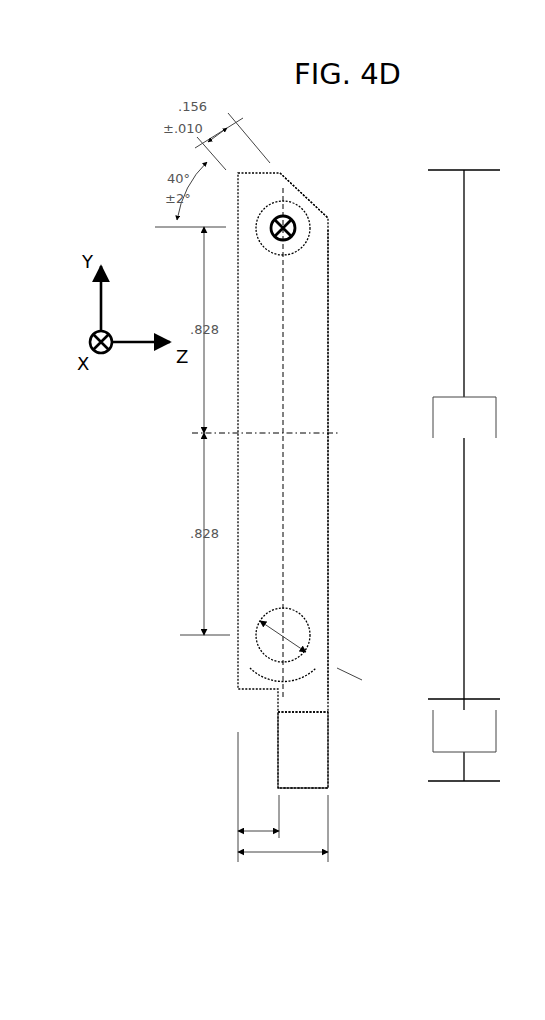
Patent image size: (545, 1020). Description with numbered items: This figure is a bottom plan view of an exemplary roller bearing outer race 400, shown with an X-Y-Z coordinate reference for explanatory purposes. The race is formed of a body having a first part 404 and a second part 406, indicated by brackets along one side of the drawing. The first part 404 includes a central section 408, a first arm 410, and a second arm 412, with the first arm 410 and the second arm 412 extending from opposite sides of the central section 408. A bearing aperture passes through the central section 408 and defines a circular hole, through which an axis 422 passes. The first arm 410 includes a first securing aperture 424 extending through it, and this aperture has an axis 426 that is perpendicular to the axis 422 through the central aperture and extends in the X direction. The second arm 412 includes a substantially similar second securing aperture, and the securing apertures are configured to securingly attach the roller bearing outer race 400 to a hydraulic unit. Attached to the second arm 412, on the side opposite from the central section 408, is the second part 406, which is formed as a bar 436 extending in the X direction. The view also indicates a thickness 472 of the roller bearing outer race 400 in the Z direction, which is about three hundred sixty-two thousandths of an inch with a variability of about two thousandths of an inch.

The roller bearing outer race 400 is at (402, 150).
The first part 404 is at (464, 434).
The second part 406 is at (464, 740).
The central section 408 is at (315, 527).
The first arm 410 is at (275, 181).
The second arm 412 is at (322, 623).
The axis 422 is at (334, 431).
The first securing aperture 424 is at (302, 238).
The axis 426 is at (292, 219).
The bar 436 is at (290, 757).
The thickness 472 is at (315, 863).